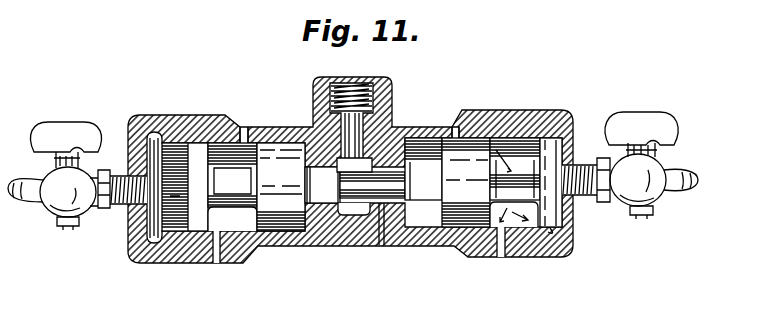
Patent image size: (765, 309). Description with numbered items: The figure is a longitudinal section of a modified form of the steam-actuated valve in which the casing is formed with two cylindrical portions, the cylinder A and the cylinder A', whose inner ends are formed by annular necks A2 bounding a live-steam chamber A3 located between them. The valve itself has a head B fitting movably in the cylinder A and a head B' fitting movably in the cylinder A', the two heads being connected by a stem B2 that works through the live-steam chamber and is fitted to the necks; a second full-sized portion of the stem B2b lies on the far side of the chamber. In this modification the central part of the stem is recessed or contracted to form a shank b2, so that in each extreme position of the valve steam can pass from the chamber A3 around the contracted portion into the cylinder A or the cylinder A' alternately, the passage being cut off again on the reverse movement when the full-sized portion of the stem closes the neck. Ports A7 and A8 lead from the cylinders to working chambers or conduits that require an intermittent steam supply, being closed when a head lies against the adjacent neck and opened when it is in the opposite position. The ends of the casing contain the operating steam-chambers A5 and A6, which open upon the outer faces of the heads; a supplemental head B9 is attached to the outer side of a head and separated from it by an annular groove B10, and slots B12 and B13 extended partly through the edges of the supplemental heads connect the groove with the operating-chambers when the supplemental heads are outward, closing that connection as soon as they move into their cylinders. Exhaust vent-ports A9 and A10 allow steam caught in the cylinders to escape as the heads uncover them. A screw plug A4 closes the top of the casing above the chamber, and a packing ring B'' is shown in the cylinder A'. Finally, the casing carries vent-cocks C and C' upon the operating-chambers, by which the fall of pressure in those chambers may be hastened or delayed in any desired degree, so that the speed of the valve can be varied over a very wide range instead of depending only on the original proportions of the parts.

The cylinder A is at (350, 170).
The cylinder A' is at (232, 219).
The annular neck A2 is at (420, 138).
The live-steam chamber A3 is at (355, 216).
The screw plug A4 is at (322, 125).
The operating steam-chamber A5 is at (570, 130).
The operating steam-chamber A6 is at (153, 217).
The port A7 is at (502, 246).
The port A8 is at (218, 264).
The exhaust vent-port A9 is at (458, 125).
The exhaust vent-port A10 is at (244, 130).
The head B is at (466, 182).
The head B' is at (281, 187).
The piston B'' is at (232, 175).
The stem B2 is at (322, 185).
The stem B2b is at (423, 169).
The shank b2 is at (372, 185).
The supplemental head B9 is at (185, 187).
The annular groove B10 is at (527, 138).
The slot B12 is at (551, 244).
The slot B13 is at (185, 264).
The cock C is at (647, 165).
The cock C' is at (59, 176).